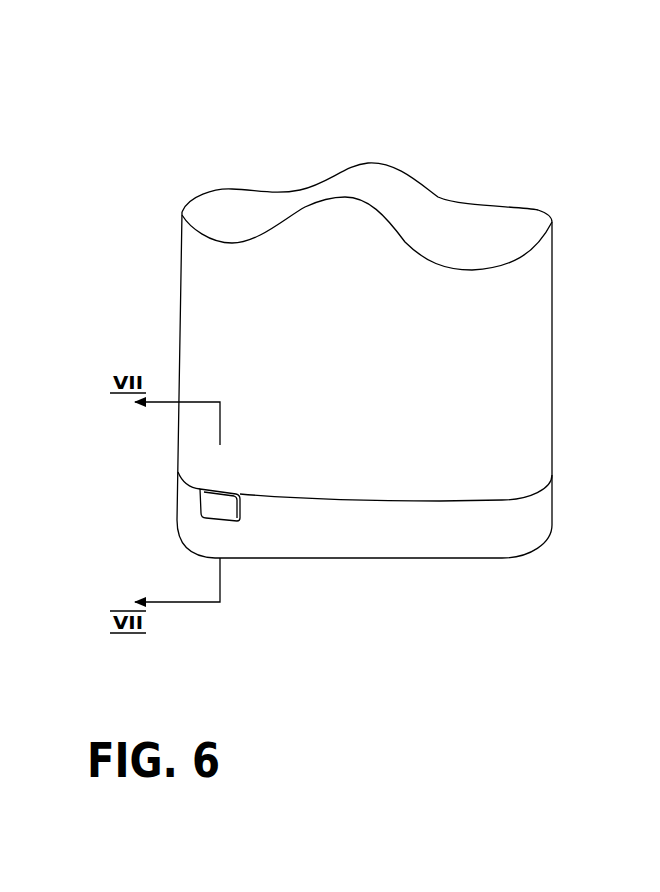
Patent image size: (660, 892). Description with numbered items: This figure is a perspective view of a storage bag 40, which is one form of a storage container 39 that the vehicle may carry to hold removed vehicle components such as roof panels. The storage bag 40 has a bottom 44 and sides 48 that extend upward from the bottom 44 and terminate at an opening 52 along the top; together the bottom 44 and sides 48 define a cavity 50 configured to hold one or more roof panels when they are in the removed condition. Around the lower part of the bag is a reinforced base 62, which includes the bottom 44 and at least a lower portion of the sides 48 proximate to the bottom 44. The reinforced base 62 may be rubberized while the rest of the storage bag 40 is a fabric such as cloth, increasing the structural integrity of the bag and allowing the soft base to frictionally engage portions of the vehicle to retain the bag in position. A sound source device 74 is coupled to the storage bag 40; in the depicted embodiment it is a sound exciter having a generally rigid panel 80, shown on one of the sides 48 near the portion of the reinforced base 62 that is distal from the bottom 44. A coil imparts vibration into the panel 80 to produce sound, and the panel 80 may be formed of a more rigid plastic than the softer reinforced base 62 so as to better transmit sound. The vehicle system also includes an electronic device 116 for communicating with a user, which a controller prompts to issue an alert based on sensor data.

The storage container 39 is at (224, 140).
The storage bag 40 is at (368, 120).
The bottom 44 is at (378, 560).
The sides 48 is at (385, 372).
The cavity 50 is at (444, 243).
The opening 52 is at (509, 212).
The reinforced base 62 is at (448, 525).
The sound source device 74 is at (193, 488).
The panel 80 is at (212, 504).
The electronic device 116 is at (203, 520).